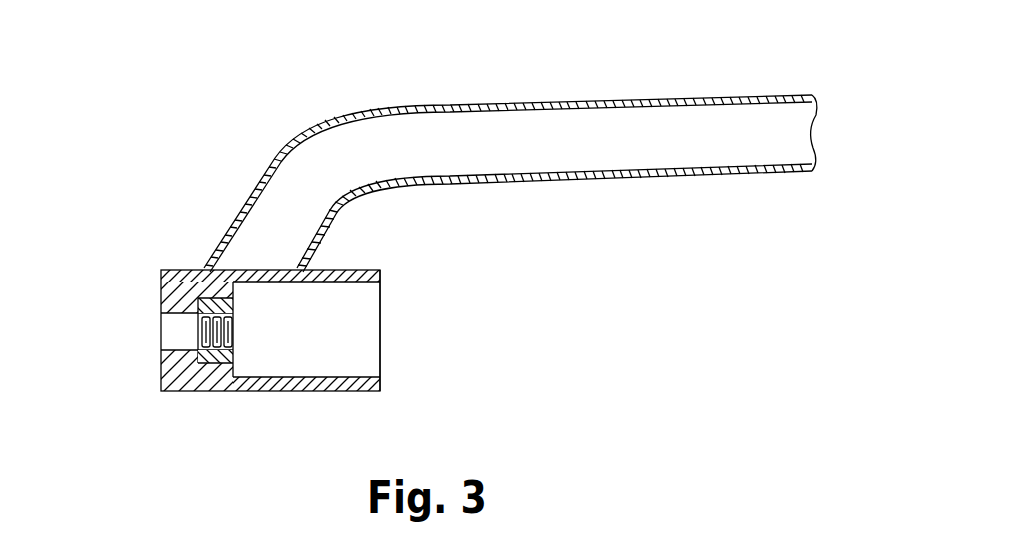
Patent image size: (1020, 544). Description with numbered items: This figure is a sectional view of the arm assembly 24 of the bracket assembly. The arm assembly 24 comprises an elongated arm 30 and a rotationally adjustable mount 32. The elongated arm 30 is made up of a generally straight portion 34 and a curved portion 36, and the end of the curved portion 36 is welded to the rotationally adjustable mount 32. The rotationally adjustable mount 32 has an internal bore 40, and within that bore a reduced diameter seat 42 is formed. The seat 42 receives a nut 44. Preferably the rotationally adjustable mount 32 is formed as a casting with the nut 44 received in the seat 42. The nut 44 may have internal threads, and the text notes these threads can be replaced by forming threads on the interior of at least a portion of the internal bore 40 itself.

The arm assembly 24 is at (645, 183).
The elongated arm 30 is at (522, 155).
The rotationally adjustable mount 32 is at (284, 345).
The generally straight portion 34 is at (593, 113).
The curved portion 36 is at (368, 97).
The internal bore 40 is at (342, 320).
The reduced diameter seat 42 is at (225, 352).
The nut 44 is at (203, 298).